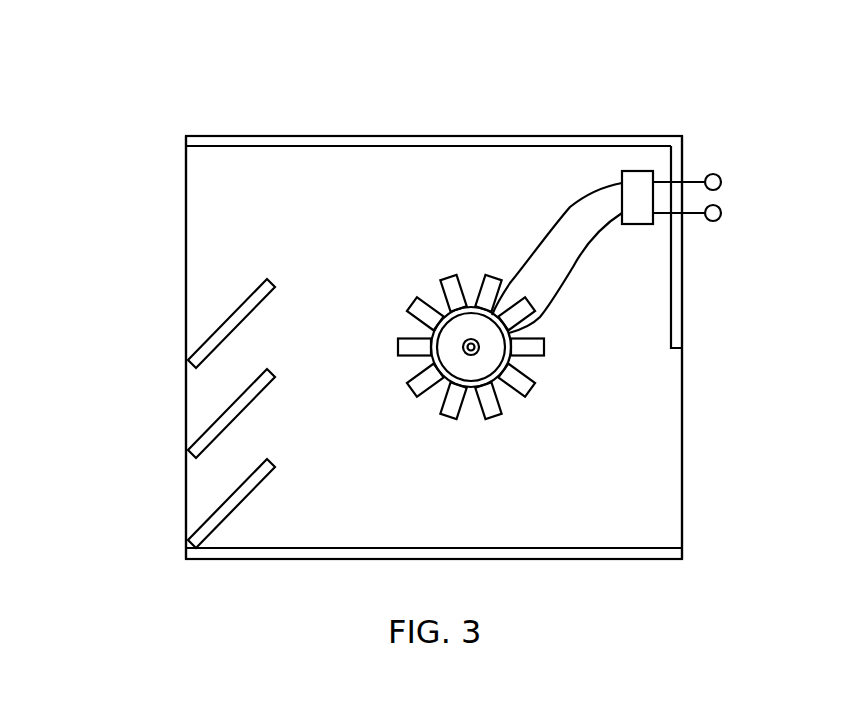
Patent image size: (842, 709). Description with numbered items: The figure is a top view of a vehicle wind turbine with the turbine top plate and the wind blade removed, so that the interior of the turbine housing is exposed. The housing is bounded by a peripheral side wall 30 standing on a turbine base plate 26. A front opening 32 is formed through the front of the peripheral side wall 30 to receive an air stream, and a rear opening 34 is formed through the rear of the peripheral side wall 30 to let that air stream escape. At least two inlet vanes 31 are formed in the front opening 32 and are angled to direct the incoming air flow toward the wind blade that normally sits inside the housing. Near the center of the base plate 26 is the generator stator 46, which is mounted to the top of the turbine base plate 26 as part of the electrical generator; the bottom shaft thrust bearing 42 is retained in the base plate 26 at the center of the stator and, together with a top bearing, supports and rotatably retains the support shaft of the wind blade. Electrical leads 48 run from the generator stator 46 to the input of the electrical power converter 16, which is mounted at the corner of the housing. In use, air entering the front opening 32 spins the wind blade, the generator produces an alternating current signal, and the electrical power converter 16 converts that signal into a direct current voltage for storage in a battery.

The electrical power converter 16 is at (637, 171).
The turbine base plate 26 is at (620, 523).
The peripheral side wall 30 is at (326, 136).
The inlet vanes 31 is at (210, 348).
The front opening 32 is at (215, 226).
The rear opening 34 is at (660, 463).
The bottom shaft thrust bearing 42 is at (471, 339).
The generator stator 46 is at (447, 418).
The electrical leads 48 is at (567, 283).